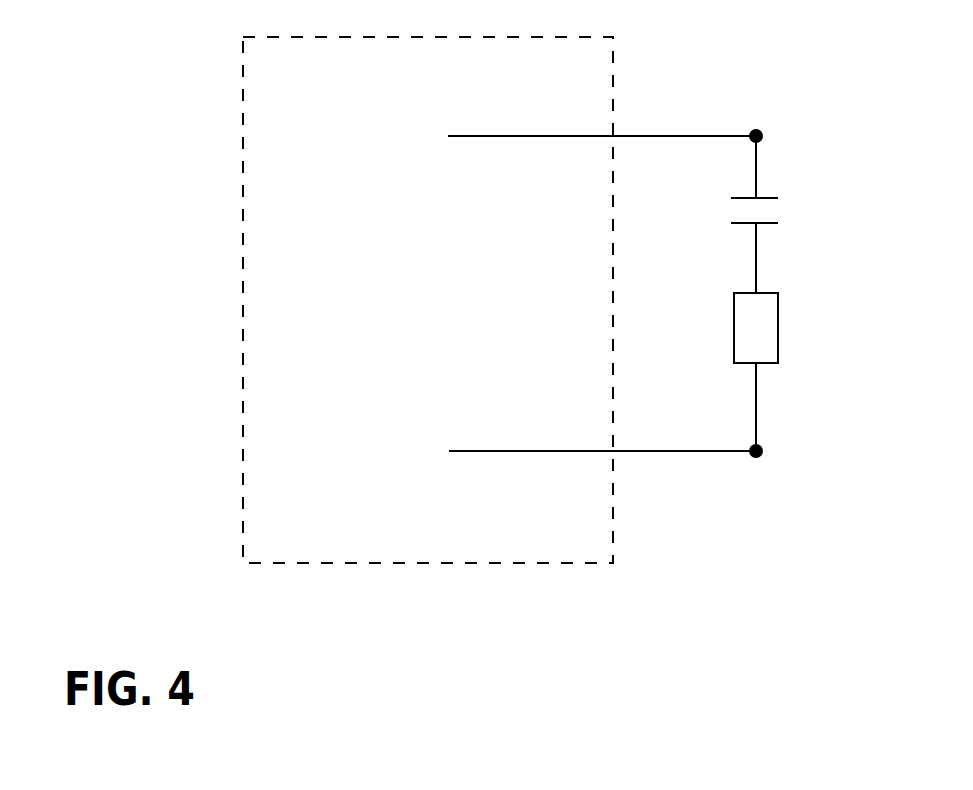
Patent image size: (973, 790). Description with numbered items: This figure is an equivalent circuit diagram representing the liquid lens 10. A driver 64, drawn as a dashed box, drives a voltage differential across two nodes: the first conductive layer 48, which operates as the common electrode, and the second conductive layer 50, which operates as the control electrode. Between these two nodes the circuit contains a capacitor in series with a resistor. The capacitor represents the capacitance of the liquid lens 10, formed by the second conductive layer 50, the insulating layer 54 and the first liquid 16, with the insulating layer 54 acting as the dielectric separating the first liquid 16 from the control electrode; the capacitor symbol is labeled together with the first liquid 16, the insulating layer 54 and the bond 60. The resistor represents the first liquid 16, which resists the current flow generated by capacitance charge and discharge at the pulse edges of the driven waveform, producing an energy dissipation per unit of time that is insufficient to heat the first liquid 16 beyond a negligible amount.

The liquid lens 10 is at (686, 287).
The first liquid 16 is at (778, 341).
The first conductive layer 48 is at (763, 456).
The second conductive layer 50 is at (763, 130).
The insulating layer 54 is at (763, 226).
The bond 60 is at (846, 237).
The driver 64 is at (483, 565).